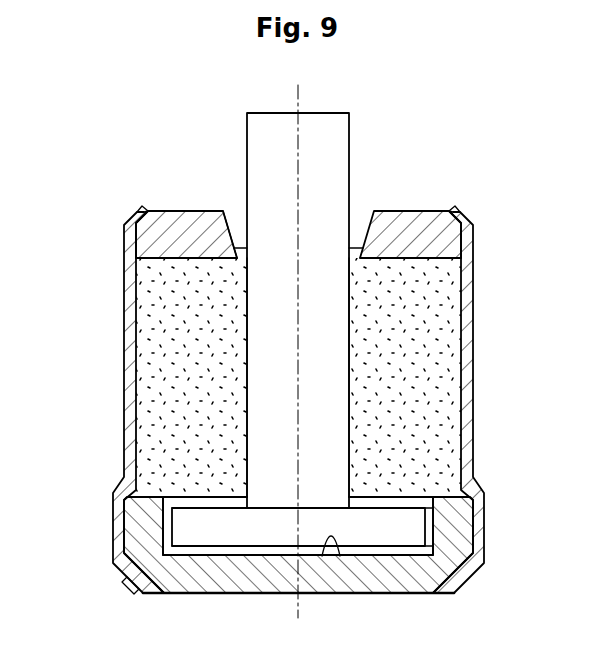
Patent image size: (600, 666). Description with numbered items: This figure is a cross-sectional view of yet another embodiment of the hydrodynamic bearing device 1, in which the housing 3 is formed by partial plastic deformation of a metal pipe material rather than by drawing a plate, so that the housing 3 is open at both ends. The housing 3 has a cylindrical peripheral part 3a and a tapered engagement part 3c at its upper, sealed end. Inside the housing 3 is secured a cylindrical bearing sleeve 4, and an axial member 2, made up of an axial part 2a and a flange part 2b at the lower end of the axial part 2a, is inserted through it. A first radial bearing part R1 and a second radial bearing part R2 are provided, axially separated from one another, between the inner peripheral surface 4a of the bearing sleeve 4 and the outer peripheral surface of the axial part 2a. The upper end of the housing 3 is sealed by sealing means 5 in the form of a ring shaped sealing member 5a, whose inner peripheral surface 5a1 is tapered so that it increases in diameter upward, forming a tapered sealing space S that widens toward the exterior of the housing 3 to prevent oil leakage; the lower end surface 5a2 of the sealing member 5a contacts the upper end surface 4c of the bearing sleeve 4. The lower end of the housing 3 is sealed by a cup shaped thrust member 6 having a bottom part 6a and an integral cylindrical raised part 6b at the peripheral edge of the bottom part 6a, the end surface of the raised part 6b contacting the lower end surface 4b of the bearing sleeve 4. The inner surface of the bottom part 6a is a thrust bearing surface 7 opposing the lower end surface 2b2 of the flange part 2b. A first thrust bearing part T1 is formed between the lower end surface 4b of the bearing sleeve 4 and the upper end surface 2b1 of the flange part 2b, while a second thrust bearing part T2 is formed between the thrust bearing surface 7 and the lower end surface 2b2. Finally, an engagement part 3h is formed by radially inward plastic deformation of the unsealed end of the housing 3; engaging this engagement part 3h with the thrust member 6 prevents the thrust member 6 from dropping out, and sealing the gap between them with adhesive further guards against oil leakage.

The hydrodynamic bearing device 1 is at (490, 170).
The axial member 2 is at (332, 110).
The axial part 2a is at (255, 138).
The flange part 2b is at (276, 538).
The upper end surface of the flange part 2b1 is at (180, 497).
The lower end surface of the flange part 2b2 is at (202, 560).
The housing 3 is at (475, 373).
The cylindrical peripheral part 3a is at (129, 386).
The engagement part 3c is at (133, 216).
The engagement part 3h is at (126, 586).
The bearing sleeve 4 is at (428, 333).
The inner peripheral surface of the bearing sleeve 4a is at (248, 280).
The lower end surface of the bearing sleeve 4b is at (372, 500).
The upper end surface of the bearing sleeve 4c is at (433, 240).
The sealing means 5 is at (425, 209).
The sealing member 5a is at (398, 222).
The inner peripheral surface of the sealing member 5a1 is at (236, 210).
The lower end surface of the sealing member 5a2 is at (177, 272).
The thrust member 6 is at (448, 560).
The bottom part of the thrust member 6a is at (232, 583).
The raised part 6b is at (140, 522).
The thrust bearing surface 7 is at (348, 540).
The sealing space S is at (357, 222).
The first radial bearing part R1 is at (244, 317).
The second radial bearing part R2 is at (244, 455).
The first thrust bearing part T1 is at (406, 503).
The second thrust bearing part T2 is at (406, 551).